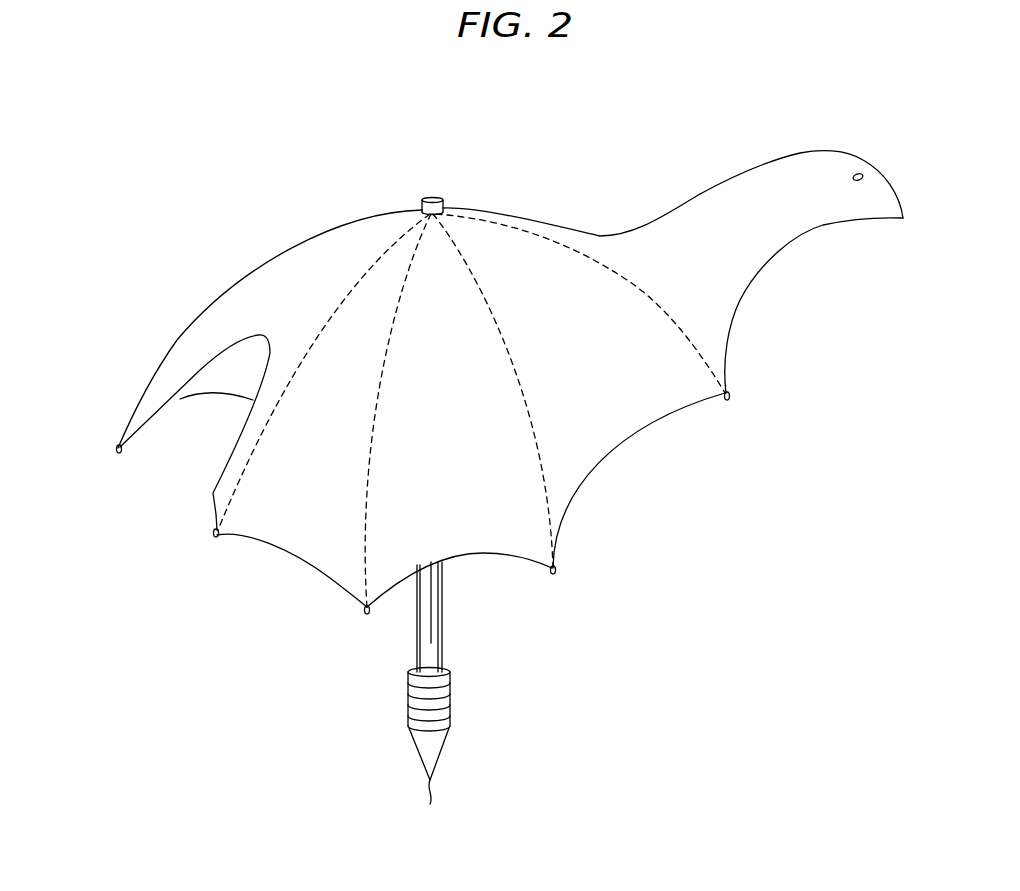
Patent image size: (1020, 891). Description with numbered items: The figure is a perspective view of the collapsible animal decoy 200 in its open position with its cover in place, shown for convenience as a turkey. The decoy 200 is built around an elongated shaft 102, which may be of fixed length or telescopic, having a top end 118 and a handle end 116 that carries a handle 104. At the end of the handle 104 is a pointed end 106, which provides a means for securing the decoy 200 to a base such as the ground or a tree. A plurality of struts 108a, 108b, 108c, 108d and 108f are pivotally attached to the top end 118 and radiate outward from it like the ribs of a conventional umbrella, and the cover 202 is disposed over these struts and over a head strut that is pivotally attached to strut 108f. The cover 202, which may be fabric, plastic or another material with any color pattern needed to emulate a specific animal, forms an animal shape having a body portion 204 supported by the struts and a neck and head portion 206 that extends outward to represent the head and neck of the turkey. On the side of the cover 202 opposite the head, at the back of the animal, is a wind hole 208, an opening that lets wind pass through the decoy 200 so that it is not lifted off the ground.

The collapsible animal decoy 200 is at (655, 106).
The cover 202 is at (330, 228).
The body portion 204 is at (597, 433).
The neck and head portion 206 is at (787, 228).
The wind hole 208 is at (205, 445).
The top end 118 is at (432, 198).
The elongated shaft 102 is at (430, 601).
The handle 104 is at (440, 708).
The pointed end 106 is at (440, 743).
The handle end 116 is at (433, 807).
The strut 108a is at (117, 453).
The strut 108b is at (213, 540).
The strut 108c is at (365, 614).
The strut 108d is at (556, 574).
The strut 108f is at (730, 400).